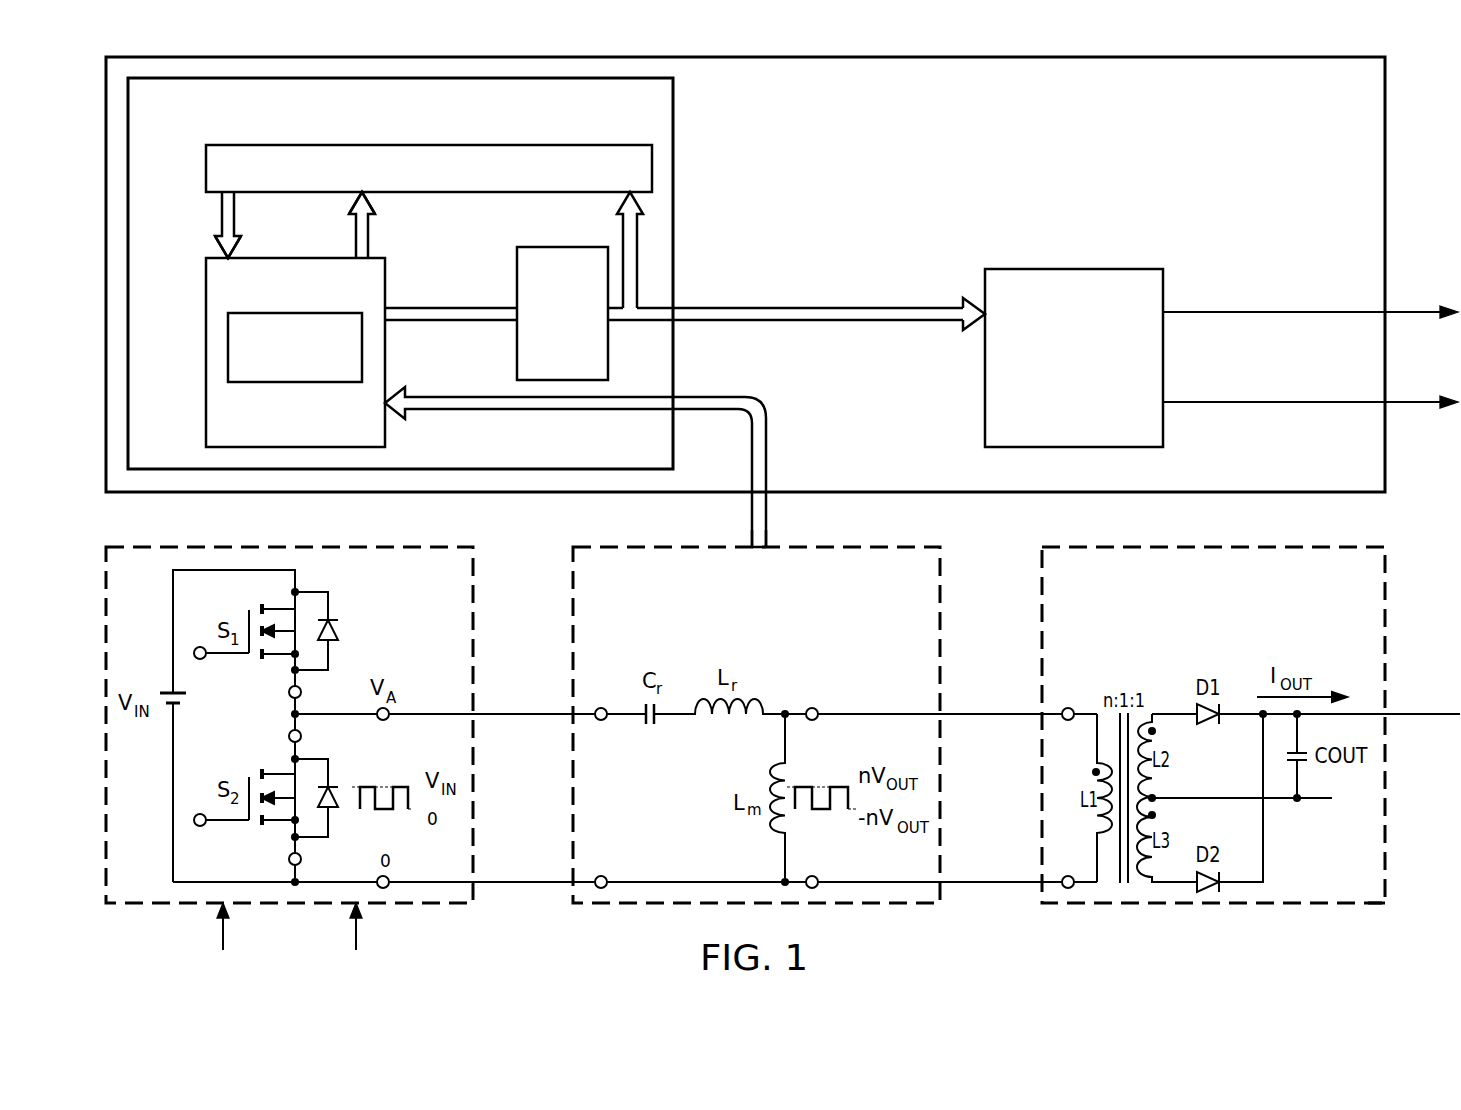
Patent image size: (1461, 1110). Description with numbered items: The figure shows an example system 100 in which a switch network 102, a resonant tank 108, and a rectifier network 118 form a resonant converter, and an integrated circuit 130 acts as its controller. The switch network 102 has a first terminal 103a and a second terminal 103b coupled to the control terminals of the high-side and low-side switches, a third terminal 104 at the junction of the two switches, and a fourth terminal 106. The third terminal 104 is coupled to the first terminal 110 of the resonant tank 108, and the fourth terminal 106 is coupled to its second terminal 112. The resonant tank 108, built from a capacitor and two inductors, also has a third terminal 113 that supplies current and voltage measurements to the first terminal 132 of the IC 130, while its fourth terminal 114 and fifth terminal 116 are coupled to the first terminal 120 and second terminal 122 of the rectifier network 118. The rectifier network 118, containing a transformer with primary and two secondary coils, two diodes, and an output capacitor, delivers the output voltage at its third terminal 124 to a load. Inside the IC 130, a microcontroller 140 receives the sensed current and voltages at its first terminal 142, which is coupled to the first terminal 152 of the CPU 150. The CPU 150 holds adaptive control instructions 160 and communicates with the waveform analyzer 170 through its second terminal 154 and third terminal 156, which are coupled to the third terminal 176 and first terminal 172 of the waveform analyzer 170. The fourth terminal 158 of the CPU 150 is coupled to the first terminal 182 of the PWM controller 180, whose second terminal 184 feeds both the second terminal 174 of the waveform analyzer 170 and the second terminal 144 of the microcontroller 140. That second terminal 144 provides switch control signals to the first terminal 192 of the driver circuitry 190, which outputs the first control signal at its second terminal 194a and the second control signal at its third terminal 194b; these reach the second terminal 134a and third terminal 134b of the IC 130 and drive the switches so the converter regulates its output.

The system 100 is at (1163, 920).
The switch network 102 is at (474, 606).
The first terminal of the switch network 103a is at (218, 911).
The second terminal of the switch network 103b is at (351, 911).
The third terminal of the switch network 104 is at (474, 712).
The fourth terminal of the switch network 106 is at (474, 880).
The resonant tank 108 is at (830, 615).
The first terminal of the resonant tank 110 is at (573, 718).
The second terminal of the resonant tank 112 is at (573, 886).
The third terminal of the resonant tank 113 is at (770, 544).
The fourth terminal of the resonant tank 114 is at (944, 715).
The fifth terminal of the resonant tank 116 is at (944, 883).
The rectifier network 118 is at (1288, 615).
The first terminal of the rectifier network 120 is at (1041, 718).
The second terminal of the rectifier network 122 is at (1041, 886).
The third terminal of the rectifier network 124 is at (1393, 718).
The integrated circuit 130 is at (1072, 176).
The first terminal of the IC 132 is at (745, 496).
The second terminal of the IC 134a is at (1393, 320).
The third terminal of the IC 134b is at (1393, 410).
The microcontroller 140 is at (444, 127).
The first terminal of the MCU 142 is at (680, 390).
The second terminal of the MCU 144 is at (680, 302).
The central processor unit 150 is at (206, 355).
The first terminal of the CPU 152 is at (388, 416).
The second terminal of the CPU 154 is at (236, 254).
The third terminal of the CPU 156 is at (373, 254).
The fourth terminal of the CPU 158 is at (390, 325).
The adaptive control instructions 160 is at (297, 382).
The waveform analyzer 170 is at (206, 171).
The first terminal of the waveform analyzer 172 is at (353, 198).
The second terminal of the waveform analyzer 174 is at (620, 198).
The third terminal of the waveform analyzer 176 is at (218, 205).
The PWM controller 180 is at (541, 361).
The first terminal of the PWM controller 182 is at (512, 326).
The second terminal of the PWM controller 184 is at (612, 325).
The driver circuitry 190 is at (1054, 404).
The first terminal of the driver circuitry 192 is at (984, 303).
The second terminal of the driver circuitry 194a is at (1168, 308).
The third terminal of the driver circuitry 194b is at (1168, 398).